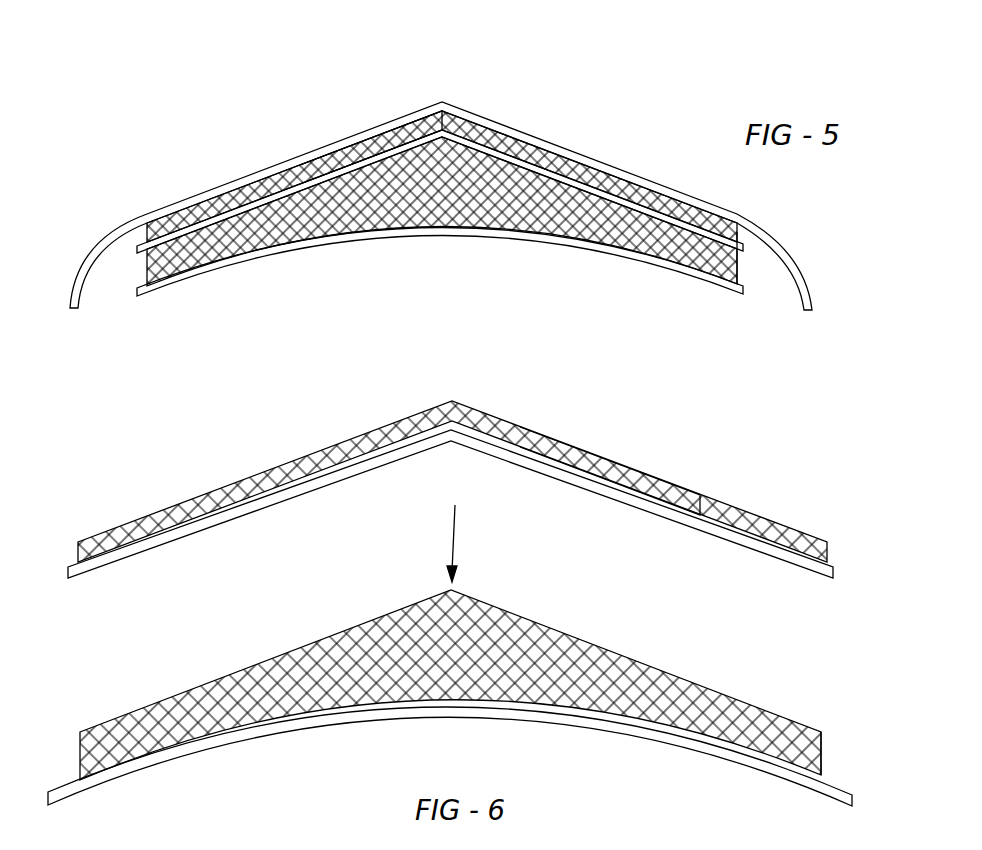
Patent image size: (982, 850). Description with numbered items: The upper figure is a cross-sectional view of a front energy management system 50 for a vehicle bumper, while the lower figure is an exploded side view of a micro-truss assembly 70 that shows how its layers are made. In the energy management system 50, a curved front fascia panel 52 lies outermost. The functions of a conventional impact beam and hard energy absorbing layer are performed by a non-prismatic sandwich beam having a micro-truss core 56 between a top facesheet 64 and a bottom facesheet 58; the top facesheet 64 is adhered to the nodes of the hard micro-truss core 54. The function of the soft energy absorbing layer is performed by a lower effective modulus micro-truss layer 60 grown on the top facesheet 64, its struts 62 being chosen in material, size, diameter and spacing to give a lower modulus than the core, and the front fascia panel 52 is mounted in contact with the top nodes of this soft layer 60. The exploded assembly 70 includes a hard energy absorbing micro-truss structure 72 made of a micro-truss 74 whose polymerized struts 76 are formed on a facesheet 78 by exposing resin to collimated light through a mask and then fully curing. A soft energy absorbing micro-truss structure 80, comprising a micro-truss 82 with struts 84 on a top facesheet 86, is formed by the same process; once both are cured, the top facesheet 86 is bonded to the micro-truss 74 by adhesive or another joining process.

In FIG. 5, the front energy management system 50 is at (441, 182).
In FIG. 5, the front fascia panel 52 is at (198, 195).
In FIG. 5, the micro-truss core 54 is at (745, 263).
In FIG. 5, the micro-truss core 56 is at (632, 223).
In FIG. 5, the bottom facesheet 58 is at (400, 228).
In FIG. 5, the micro-truss layer 60 is at (270, 187).
In FIG. 5, the struts 62 is at (368, 142).
In FIG. 5, the top facesheet 64 is at (468, 137).
In FIG. 6, the micro-truss assembly 70 is at (460, 569).
In FIG. 6, the hard energy absorbing micro-truss structure 72 is at (460, 698).
In FIG. 6, the micro-truss 74 is at (826, 750).
In FIG. 6, the polymerized struts 76 is at (298, 686).
In FIG. 6, the facesheet 78 is at (815, 780).
In FIG. 6, the soft energy absorbing micro-truss structure 80 is at (450, 449).
In FIG. 6, the micro-truss 82 is at (580, 445).
In FIG. 6, the struts 84 is at (468, 410).
In FIG. 6, the top facesheet 86 is at (523, 452).